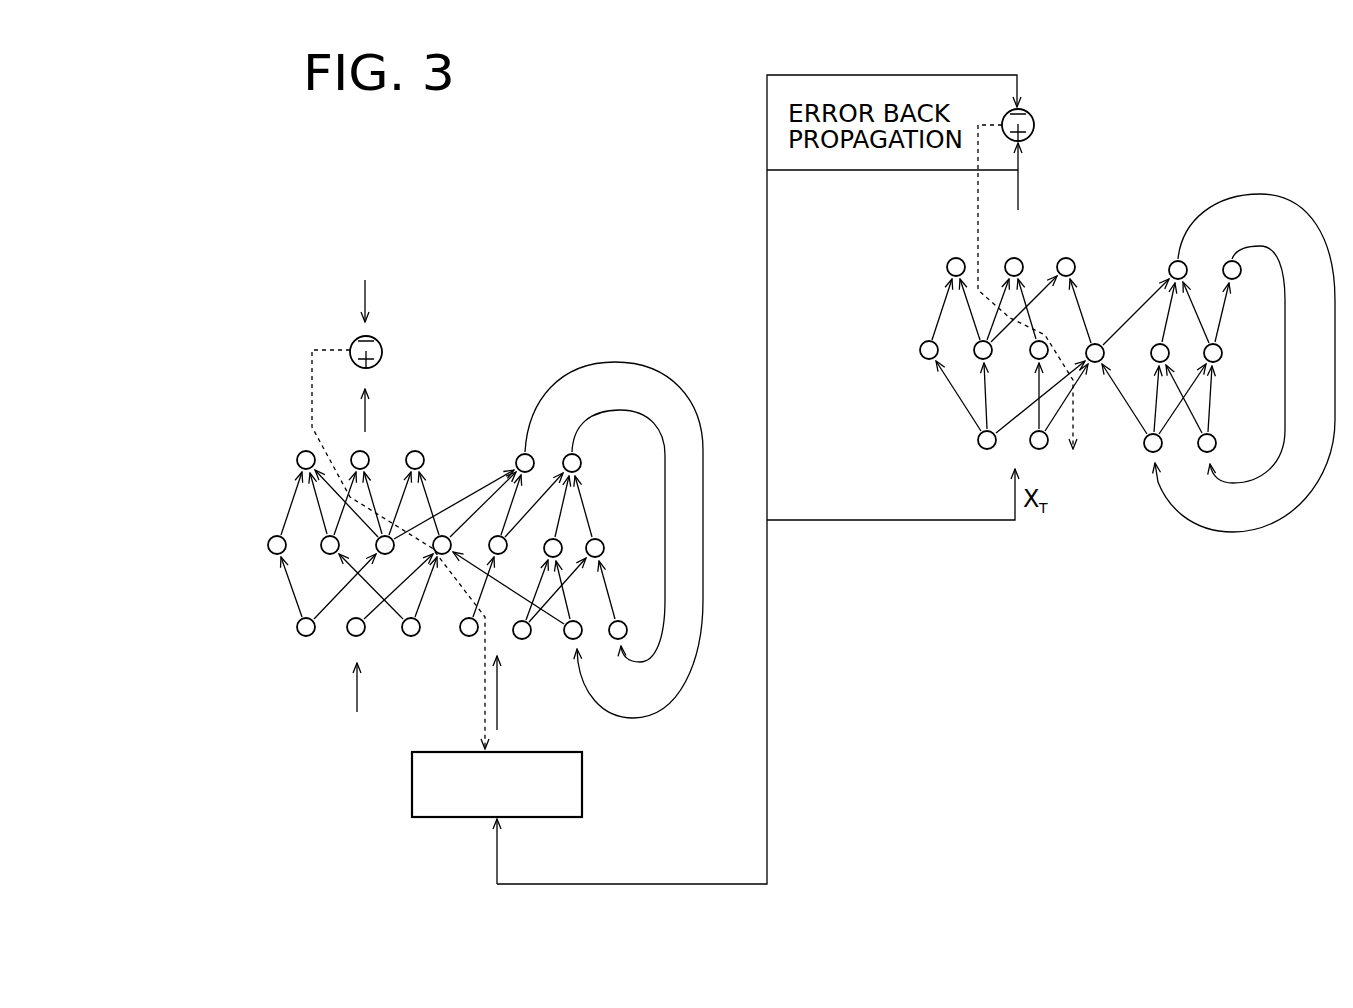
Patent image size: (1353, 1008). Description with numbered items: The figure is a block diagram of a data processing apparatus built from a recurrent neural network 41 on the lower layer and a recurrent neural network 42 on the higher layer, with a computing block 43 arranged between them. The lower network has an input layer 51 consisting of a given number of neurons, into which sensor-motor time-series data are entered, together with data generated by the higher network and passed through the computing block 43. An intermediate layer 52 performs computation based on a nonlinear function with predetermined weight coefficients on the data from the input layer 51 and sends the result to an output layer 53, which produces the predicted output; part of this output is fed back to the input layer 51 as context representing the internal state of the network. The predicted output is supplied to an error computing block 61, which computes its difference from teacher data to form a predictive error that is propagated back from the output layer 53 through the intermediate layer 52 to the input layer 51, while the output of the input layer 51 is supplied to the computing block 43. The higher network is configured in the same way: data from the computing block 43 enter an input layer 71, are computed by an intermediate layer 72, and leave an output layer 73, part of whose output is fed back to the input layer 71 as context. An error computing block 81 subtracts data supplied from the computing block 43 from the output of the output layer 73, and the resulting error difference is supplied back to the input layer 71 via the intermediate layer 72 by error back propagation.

The recurrent neural network 41 is at (521, 372).
The recurrent neural network 42 is at (1158, 187).
The computing block 43 is at (583, 783).
The input layer 51 is at (296, 630).
The intermediate layer 52 is at (267, 545).
The output layer 53 is at (296, 462).
The error computing block 61 is at (383, 350).
The input layer 71 is at (977, 440).
The intermediate layer 72 is at (919, 350).
The output layer 73 is at (946, 267).
The error computing block 81 is at (1035, 125).